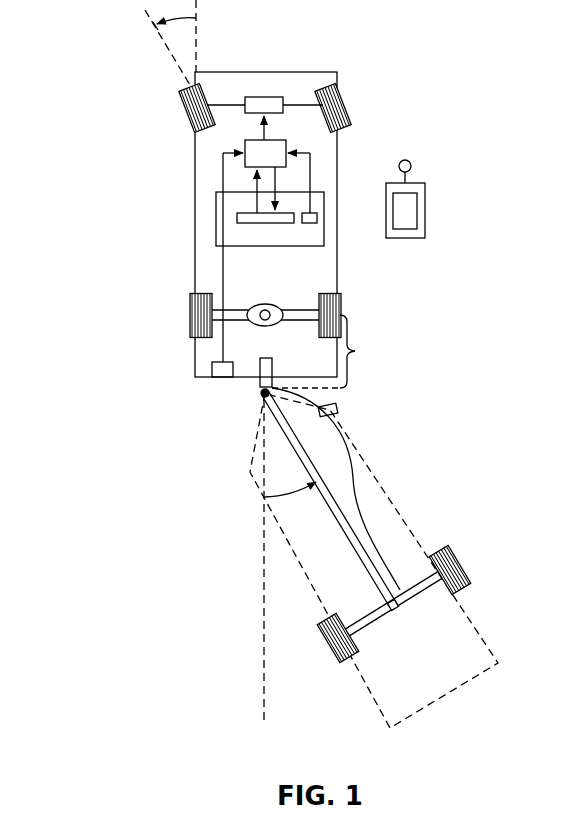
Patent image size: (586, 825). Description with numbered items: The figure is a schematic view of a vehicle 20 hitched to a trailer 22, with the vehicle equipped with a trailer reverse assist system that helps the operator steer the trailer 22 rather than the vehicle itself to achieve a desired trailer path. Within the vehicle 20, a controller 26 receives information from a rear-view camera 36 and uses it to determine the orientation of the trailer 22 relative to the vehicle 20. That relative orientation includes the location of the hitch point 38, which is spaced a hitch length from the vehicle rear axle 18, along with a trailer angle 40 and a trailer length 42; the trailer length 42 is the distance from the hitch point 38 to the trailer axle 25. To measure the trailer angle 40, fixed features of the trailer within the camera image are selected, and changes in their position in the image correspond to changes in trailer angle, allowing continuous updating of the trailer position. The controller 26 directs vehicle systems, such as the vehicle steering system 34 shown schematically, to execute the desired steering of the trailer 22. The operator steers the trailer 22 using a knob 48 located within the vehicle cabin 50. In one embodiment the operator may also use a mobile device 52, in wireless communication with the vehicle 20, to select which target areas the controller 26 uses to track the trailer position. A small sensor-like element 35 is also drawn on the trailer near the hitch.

The vehicle rear axle 18 is at (307, 312).
The vehicle 20 is at (205, 178).
The trailer 22 is at (214, 213).
The trailer axle 25 is at (422, 592).
The controller 26 is at (243, 143).
The vehicle steering system 34 is at (267, 95).
The trailer sensor 35 is at (338, 405).
The rear-view camera 36 is at (220, 377).
The hitch point 38 is at (260, 397).
The trailer angle 40 is at (236, 493).
The trailer length 42 is at (355, 480).
The knob 48 is at (318, 218).
The vehicle cabin 50 is at (263, 247).
The mobile device 52 is at (426, 210).